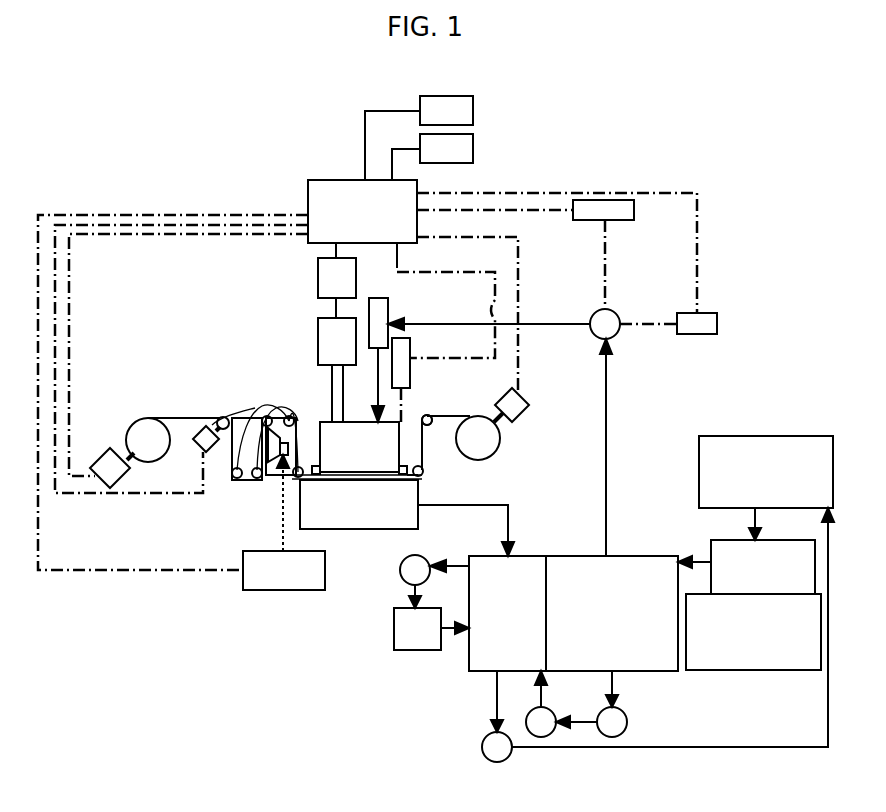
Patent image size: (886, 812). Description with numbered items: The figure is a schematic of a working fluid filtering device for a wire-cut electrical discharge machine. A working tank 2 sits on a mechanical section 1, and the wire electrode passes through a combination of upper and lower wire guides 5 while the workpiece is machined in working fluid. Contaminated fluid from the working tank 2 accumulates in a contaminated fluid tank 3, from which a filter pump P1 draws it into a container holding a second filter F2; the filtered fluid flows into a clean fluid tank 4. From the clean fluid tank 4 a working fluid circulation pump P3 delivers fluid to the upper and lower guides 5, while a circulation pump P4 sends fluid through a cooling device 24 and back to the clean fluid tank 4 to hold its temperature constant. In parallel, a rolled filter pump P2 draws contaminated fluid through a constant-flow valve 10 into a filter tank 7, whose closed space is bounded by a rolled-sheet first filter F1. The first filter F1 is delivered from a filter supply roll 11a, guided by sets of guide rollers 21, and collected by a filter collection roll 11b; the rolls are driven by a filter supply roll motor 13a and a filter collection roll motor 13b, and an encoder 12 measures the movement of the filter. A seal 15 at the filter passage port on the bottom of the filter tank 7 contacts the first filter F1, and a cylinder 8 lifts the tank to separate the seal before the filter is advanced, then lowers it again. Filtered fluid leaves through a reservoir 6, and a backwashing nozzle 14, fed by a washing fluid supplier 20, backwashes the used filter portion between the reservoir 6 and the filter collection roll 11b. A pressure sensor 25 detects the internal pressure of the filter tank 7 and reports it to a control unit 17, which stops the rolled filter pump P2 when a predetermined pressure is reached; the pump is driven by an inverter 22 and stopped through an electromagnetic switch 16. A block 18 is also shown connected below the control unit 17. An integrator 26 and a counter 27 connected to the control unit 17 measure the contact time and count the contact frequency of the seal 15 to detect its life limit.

The mechanical section 1 is at (755, 670).
The working tank 2 is at (711, 540).
The contaminated fluid tank 3 is at (636, 556).
The clean fluid tank 4 is at (533, 556).
The upper and lower wire guides 5 is at (757, 436).
The reservoir 6 is at (365, 529).
The filter tank 7 is at (362, 422).
The cylinder 8 is at (318, 342).
The constant-flow valve 10 is at (388, 300).
The filter supply roll 11a is at (500, 442).
The filter collection roll 11b is at (144, 420).
The encoder 12 is at (203, 434).
The filter supply roll motor 13a is at (526, 399).
The filter collection roll motor 13b is at (104, 458).
The backwashing nozzle 14 is at (270, 462).
The seal 15 is at (318, 466).
The electromagnetic switch 16 is at (634, 220).
The control unit 17 is at (320, 180).
The drive circuit 18 is at (318, 290).
The washing fluid supplier 20 is at (283, 590).
The guide rollers 21 is at (228, 417).
The inverter 22 is at (717, 322).
The cooling device 24 is at (394, 630).
The pressure sensor 25 is at (410, 346).
The integrator 26 is at (473, 108).
The counter 27 is at (473, 148).
The first filter F1 is at (427, 420).
The second filter F2 is at (528, 721).
The filter pump P1 is at (627, 724).
The rolled filter pump P2 is at (618, 335).
The working fluid circulation pump P3 is at (482, 746).
The circulation pump P4 is at (418, 556).